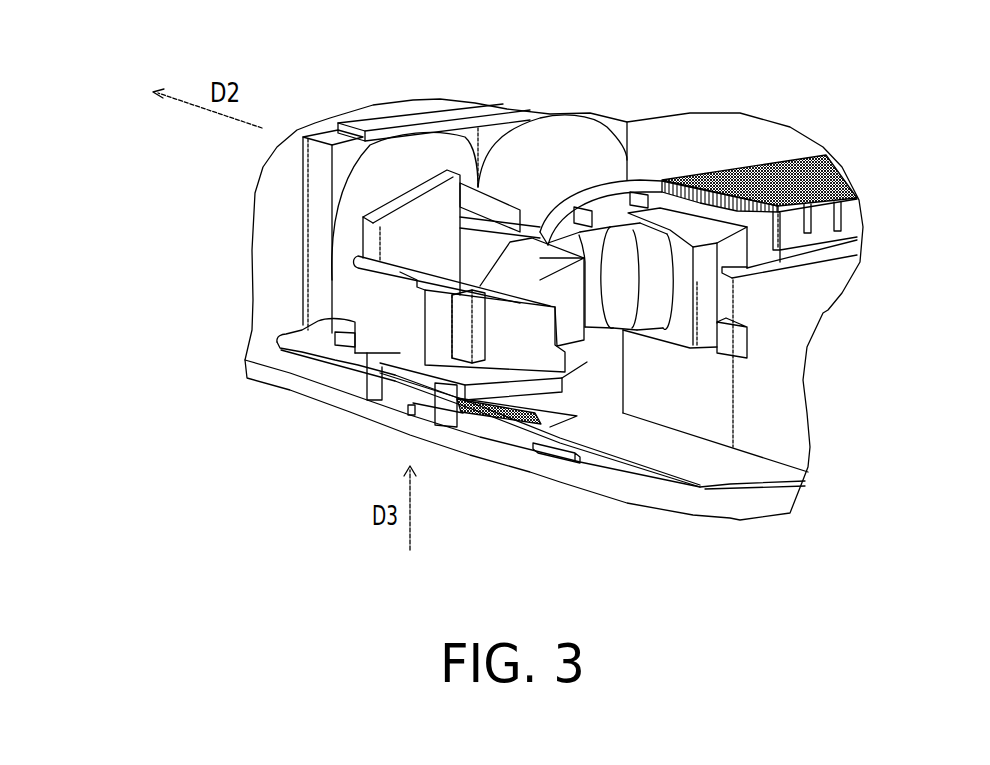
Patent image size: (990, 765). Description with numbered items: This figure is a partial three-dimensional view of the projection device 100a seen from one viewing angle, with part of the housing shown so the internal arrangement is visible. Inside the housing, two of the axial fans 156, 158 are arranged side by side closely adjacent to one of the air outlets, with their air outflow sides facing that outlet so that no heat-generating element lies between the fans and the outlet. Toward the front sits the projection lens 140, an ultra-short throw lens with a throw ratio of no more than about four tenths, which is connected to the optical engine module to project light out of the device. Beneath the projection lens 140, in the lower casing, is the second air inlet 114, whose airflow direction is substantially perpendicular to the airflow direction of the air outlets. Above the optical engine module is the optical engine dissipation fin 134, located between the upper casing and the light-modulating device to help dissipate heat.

The projection device 100a is at (808, 551).
The fan 156 is at (403, 157).
The fan 158 is at (560, 140).
The optical engine dissipation fin 134 is at (852, 214).
The projection lens 140 is at (433, 355).
The second air inlet 114 is at (498, 417).